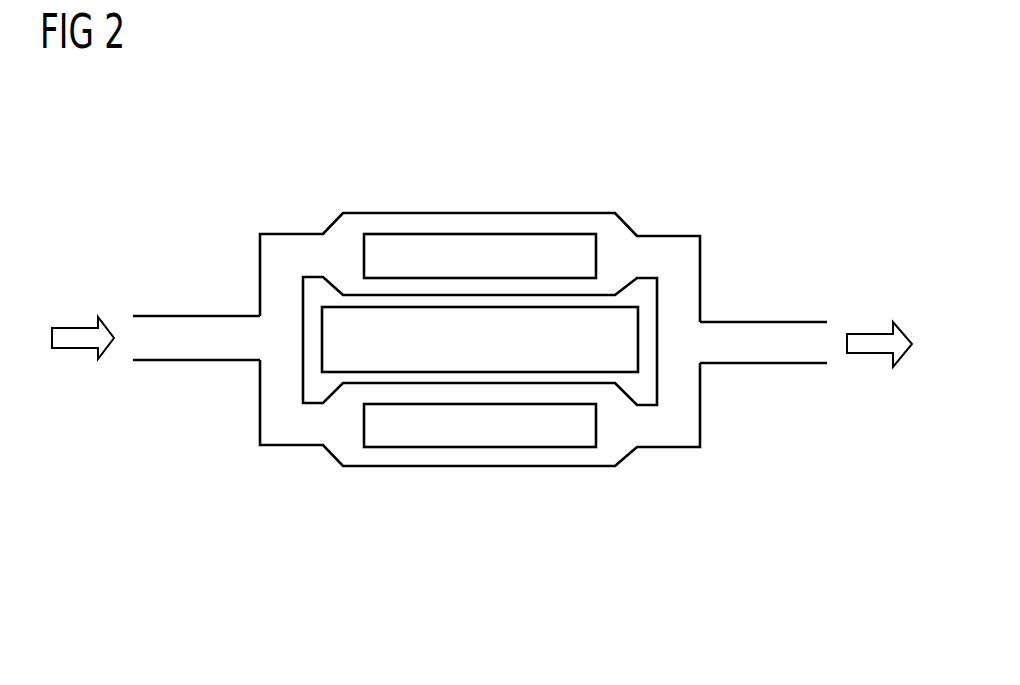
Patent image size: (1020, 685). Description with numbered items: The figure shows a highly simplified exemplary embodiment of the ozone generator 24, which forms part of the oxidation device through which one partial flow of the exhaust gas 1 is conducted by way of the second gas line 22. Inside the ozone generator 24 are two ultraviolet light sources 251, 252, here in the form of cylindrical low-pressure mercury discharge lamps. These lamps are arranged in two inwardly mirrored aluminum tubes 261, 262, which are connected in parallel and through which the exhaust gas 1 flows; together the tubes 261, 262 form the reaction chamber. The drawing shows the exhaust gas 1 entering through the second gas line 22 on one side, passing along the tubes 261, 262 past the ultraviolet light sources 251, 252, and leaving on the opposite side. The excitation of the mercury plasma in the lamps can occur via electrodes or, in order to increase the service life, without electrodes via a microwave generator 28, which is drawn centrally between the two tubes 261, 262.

The exhaust gas 1 is at (72, 326).
The second gas line 22 is at (189, 316).
The ozone generator 24 is at (741, 143).
The microwave generator 28 is at (322, 357).
The ultraviolet light source 251 is at (519, 233).
The ultraviolet light source 252 is at (518, 449).
The inwardly mirrored aluminum tube 261 is at (398, 212).
The inwardly mirrored aluminum tube 262 is at (397, 468).